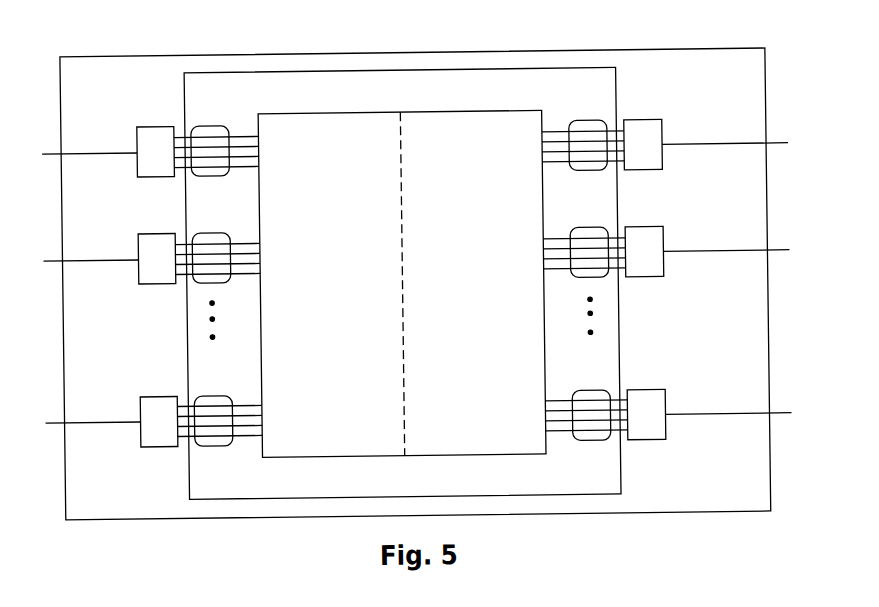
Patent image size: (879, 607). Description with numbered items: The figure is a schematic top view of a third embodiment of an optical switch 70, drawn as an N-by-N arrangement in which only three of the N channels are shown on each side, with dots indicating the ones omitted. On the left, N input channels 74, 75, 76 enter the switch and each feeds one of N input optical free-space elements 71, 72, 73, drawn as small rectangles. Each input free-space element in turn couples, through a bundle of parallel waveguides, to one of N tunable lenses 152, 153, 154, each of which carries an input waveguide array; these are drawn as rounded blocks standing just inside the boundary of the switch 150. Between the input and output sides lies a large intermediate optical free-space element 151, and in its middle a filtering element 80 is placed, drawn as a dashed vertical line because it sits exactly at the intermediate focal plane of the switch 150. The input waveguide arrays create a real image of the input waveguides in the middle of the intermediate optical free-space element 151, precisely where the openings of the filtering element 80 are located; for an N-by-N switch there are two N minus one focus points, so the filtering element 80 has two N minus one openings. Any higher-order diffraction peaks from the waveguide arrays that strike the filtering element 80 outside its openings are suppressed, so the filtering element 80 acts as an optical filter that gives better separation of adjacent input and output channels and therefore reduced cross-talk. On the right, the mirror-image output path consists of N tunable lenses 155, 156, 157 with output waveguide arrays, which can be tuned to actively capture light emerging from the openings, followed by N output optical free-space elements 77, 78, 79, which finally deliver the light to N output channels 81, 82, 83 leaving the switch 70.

The switch 70 is at (96, 514).
The switch 150 is at (288, 74).
The intermediate optical free-space element 151 is at (296, 461).
The filtering element 80 is at (405, 174).
The input optical free-space element 71 is at (154, 128).
The input optical free-space element 72 is at (153, 234).
The input optical free-space element 73 is at (153, 398).
The input channel 74 is at (72, 153).
The input channel 75 is at (70, 261).
The input channel 76 is at (70, 423).
The tunable lens with input waveguide array 152 is at (212, 130).
The tunable lens with input waveguide array 153 is at (201, 235).
The tunable lens with input waveguide array 154 is at (201, 399).
The tunable lens with output waveguide array 155 is at (590, 129).
The tunable lens with output waveguide array 156 is at (598, 235).
The tunable lens with output waveguide array 157 is at (597, 399).
The output optical free-space element 77 is at (647, 128).
The output optical free-space element 78 is at (646, 236).
The output optical free-space element 79 is at (647, 396).
The output channel 81 is at (744, 152).
The output channel 82 is at (743, 259).
The output channel 83 is at (744, 422).